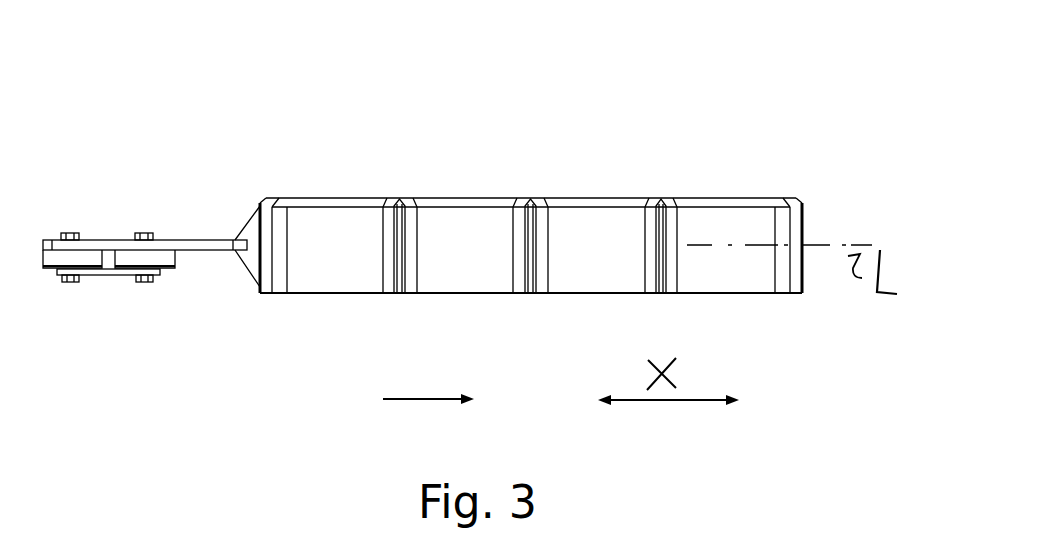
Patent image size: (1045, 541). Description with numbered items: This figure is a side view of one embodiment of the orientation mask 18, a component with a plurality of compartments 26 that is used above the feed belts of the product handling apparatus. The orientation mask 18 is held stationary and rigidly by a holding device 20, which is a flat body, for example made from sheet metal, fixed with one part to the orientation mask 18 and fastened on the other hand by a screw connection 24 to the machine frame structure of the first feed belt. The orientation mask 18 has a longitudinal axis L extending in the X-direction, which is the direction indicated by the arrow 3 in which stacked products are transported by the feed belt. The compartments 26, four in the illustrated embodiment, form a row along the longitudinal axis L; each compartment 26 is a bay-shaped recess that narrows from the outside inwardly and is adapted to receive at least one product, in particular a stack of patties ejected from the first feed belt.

The orientation mask 18 is at (738, 104).
The holding device 20 is at (151, 175).
The screw connection 24 is at (68, 229).
The compartments 26 is at (336, 280).
The arrow 3 is at (425, 400).